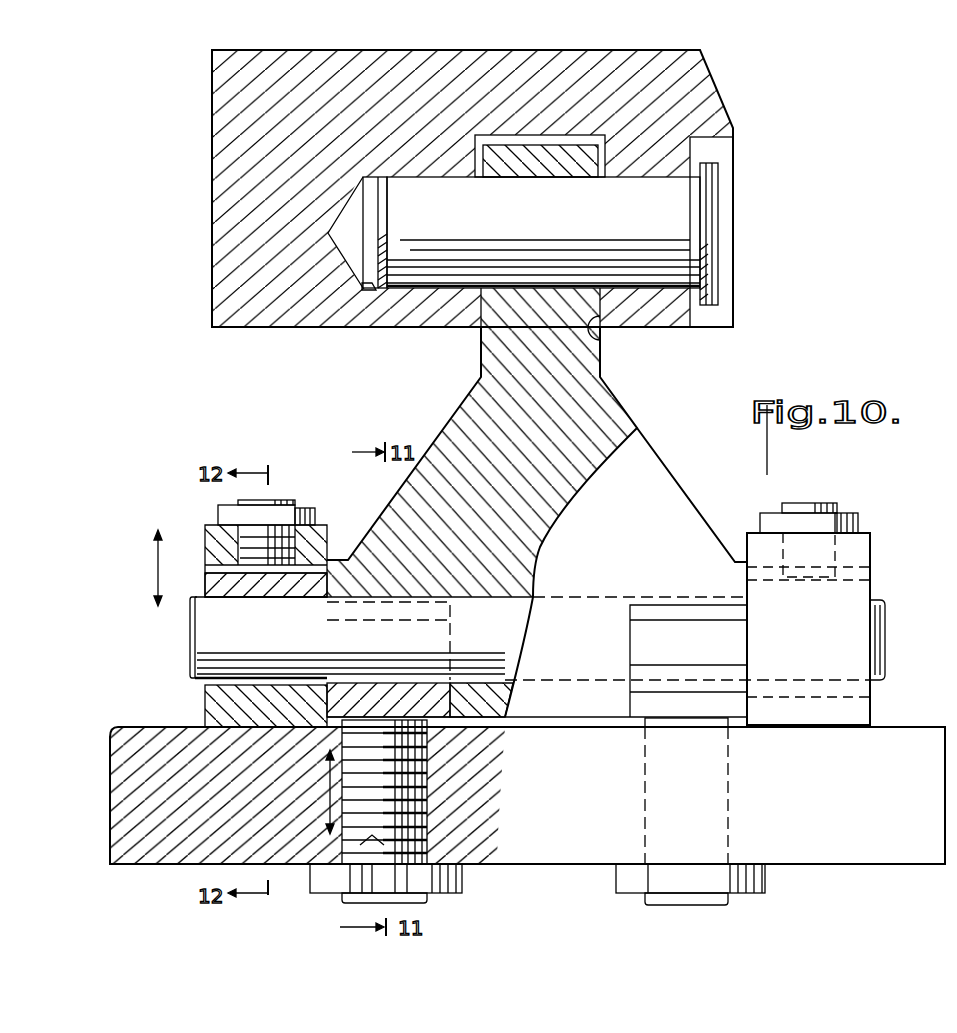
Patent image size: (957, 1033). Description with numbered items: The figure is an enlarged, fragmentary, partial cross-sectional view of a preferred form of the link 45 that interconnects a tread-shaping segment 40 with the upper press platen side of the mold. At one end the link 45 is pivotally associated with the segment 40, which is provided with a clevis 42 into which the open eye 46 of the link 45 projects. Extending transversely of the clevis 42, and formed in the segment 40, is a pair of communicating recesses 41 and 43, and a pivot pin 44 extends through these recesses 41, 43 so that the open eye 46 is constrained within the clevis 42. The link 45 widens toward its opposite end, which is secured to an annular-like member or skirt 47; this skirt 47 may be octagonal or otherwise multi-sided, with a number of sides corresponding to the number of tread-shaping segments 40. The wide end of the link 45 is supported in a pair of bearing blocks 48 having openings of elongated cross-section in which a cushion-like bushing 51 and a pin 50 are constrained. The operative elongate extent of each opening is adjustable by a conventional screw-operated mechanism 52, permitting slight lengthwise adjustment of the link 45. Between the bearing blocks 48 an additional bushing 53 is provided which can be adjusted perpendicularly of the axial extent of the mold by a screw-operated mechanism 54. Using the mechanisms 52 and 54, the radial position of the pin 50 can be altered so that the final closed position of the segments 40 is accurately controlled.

The tread-shaping segment 40 is at (252, 216).
The recess 41 is at (722, 143).
The clevis 42 is at (600, 336).
The recess 43 is at (365, 292).
The pivot pin 44 is at (706, 257).
The link 45 is at (594, 411).
The open eye 46 is at (552, 178).
The skirt 47 is at (148, 855).
The bearing block 48 is at (207, 702).
The pin 50 is at (202, 638).
The cushion-like bushing 51 is at (207, 585).
The screw-operated mechanism 52 is at (294, 502).
The bushing 53 is at (448, 680).
The screw-operated mechanism 54 is at (428, 896).